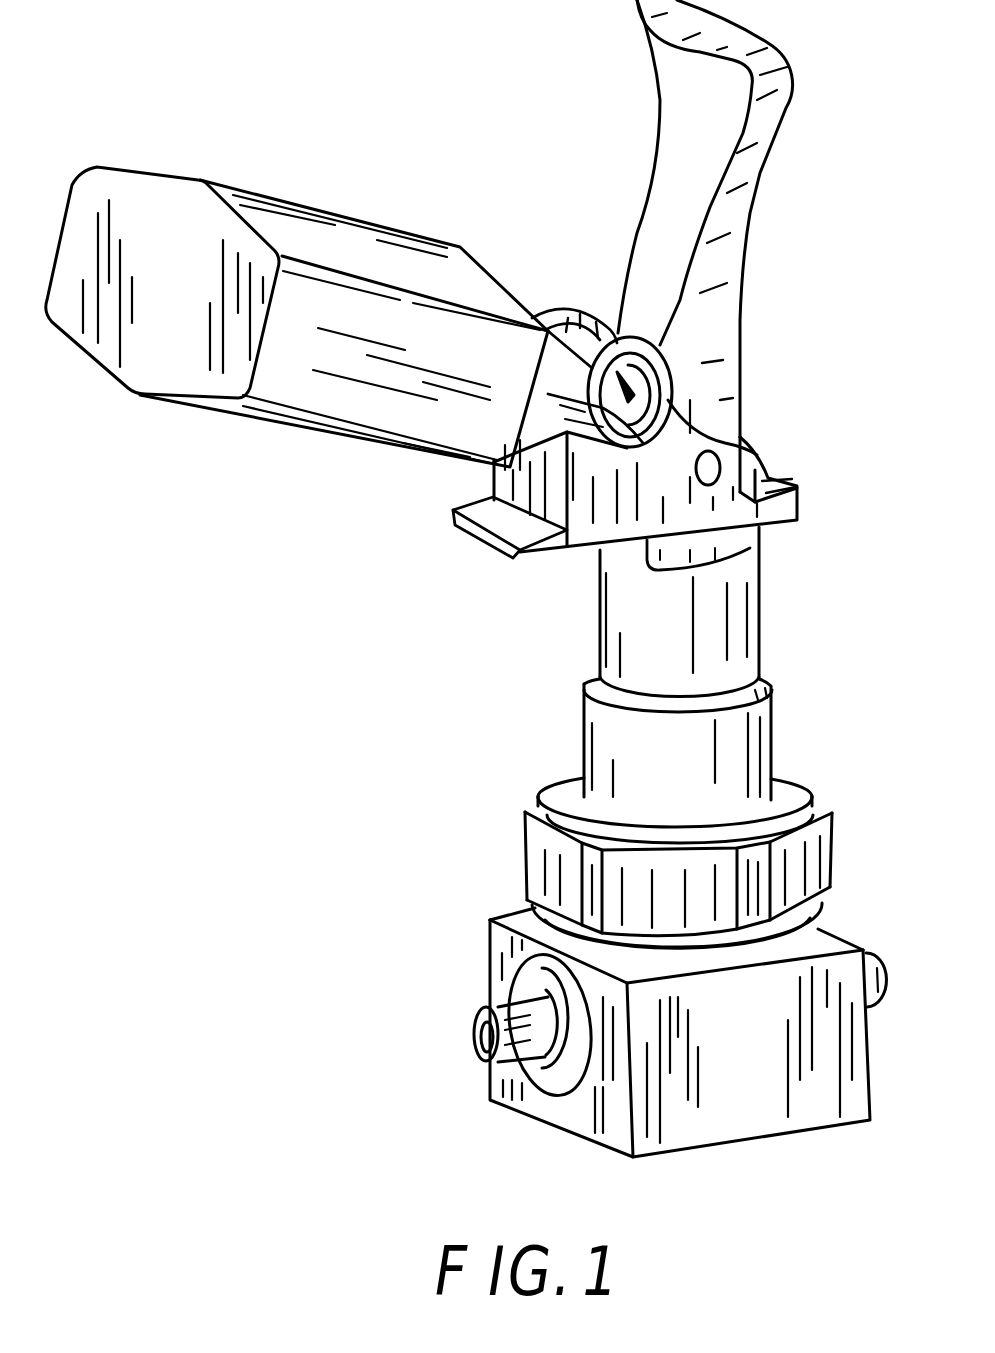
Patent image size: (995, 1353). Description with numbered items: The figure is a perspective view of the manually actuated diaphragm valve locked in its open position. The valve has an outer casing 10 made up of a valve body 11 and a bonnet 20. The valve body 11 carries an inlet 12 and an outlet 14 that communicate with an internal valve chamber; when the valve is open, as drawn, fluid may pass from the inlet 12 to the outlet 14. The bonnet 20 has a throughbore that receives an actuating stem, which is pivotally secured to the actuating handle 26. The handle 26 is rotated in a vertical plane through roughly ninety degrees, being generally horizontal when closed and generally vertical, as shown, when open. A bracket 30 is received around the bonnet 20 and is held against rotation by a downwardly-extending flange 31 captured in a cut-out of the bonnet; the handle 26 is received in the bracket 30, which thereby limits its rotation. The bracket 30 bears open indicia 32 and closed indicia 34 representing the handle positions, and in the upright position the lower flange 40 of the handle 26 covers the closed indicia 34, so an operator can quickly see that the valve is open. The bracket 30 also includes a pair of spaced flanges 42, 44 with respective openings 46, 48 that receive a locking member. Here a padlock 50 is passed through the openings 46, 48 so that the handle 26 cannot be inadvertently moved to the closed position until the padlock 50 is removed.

The outer casing 10 is at (740, 652).
The valve body 11 is at (583, 1105).
The inlet 12 is at (495, 1043).
The outlet 14 is at (885, 955).
The bonnet 20 is at (633, 597).
The actuating handle 26 is at (700, 172).
The bracket 30 is at (660, 472).
The downwardly-extending flange 31 is at (713, 562).
The open indicia 32 is at (482, 503).
The closed indicia 34 is at (787, 473).
The lower flange 40 is at (752, 468).
The flange 42 is at (668, 390).
The flange 44 is at (565, 312).
The opening 46 is at (668, 402).
The opening 48 is at (588, 322).
The padlock 50 is at (340, 242).